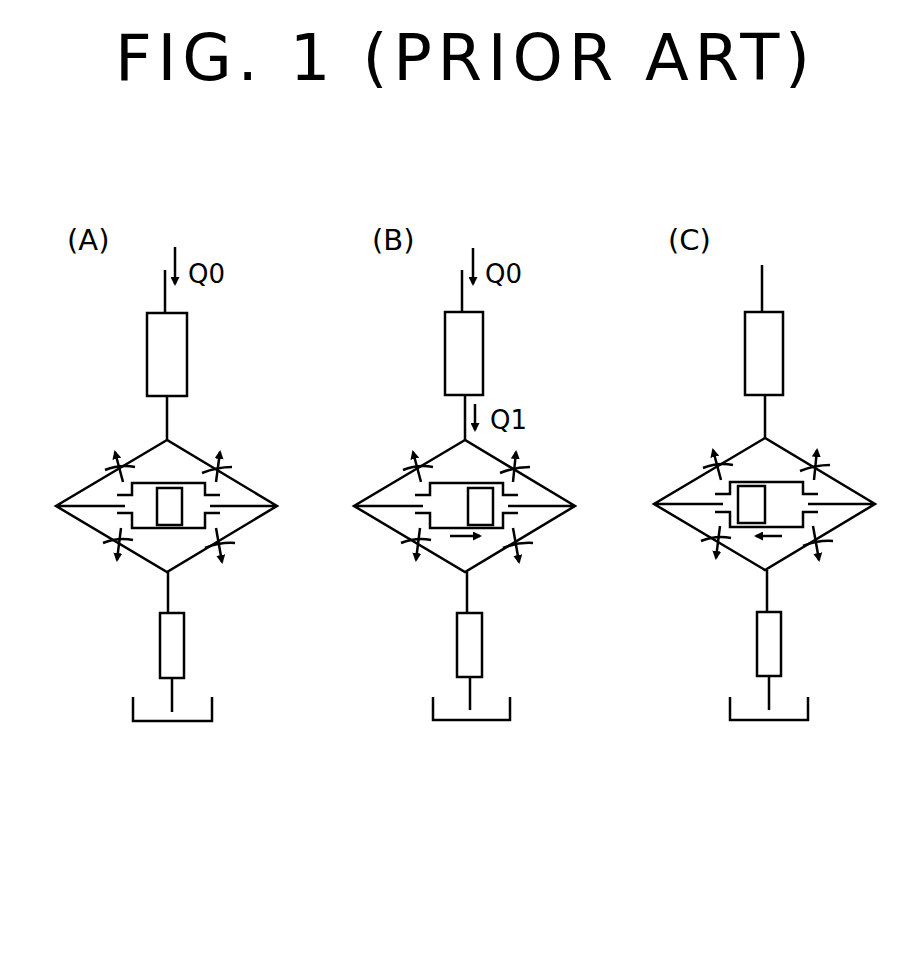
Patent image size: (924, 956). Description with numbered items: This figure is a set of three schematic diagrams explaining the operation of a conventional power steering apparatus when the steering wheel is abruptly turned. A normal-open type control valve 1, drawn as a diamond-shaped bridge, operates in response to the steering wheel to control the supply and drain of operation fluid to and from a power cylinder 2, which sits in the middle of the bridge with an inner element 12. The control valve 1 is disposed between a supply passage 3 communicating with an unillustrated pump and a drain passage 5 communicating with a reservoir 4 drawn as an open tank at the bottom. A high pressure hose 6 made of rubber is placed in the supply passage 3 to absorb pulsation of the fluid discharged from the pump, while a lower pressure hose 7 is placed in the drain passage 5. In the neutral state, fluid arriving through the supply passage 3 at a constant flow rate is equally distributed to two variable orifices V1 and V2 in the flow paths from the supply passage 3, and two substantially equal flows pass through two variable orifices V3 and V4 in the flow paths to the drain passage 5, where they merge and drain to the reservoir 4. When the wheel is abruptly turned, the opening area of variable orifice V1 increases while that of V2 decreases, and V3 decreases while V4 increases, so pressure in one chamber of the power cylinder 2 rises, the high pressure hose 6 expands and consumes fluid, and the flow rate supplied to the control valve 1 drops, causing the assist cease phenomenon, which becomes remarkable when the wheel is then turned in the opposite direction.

The control valve 1 is at (134, 428).
The power cylinder 2 is at (152, 528).
The supply passage 3 is at (168, 420).
The reservoir 4 is at (192, 722).
The drain passage 5 is at (170, 598).
The high pressure hose 6 is at (178, 358).
The lower pressure hose 7 is at (172, 650).
The piston 12 is at (782, 482).
The variable orifice V1 is at (404, 452).
The variable orifice V2 is at (533, 462).
The variable orifice V3 is at (401, 555).
The variable orifice V4 is at (534, 554).